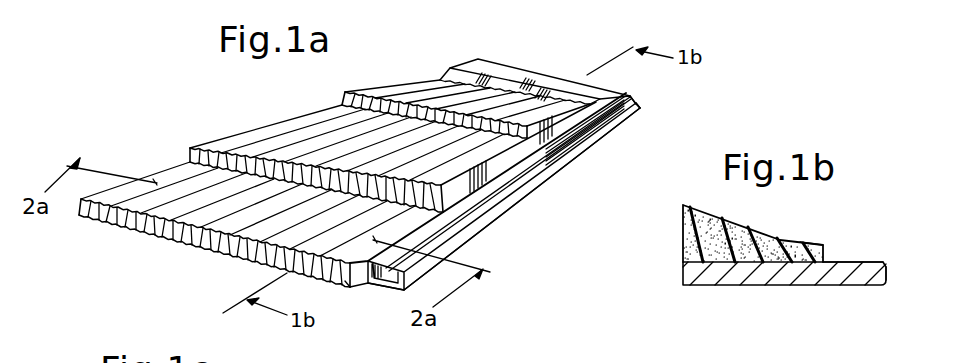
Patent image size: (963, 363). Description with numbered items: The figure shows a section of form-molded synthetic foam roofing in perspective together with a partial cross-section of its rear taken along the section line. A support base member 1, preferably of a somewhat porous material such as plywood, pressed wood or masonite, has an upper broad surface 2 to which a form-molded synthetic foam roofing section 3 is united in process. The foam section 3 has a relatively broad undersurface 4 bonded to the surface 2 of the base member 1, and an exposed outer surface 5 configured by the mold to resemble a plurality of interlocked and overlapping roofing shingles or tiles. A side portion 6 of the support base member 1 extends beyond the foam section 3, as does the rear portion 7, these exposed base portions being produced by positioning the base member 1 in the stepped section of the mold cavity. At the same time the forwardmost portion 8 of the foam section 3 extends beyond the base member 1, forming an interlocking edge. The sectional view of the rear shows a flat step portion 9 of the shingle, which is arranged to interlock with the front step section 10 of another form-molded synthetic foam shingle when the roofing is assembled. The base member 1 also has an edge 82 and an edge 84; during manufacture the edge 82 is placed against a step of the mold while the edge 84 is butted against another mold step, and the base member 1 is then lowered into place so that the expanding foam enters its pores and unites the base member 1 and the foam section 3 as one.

In FIG. 1A, the support base member 1 is at (557, 165).
In FIG. 1B, the support base member 1 is at (767, 270).
In FIG. 1A, the upper broad surface 2 is at (513, 185).
In FIG. 1A, the form-molded synthetic foam roofing section 3 is at (163, 238).
In FIG. 1B, the form-molded synthetic foam roofing section 3 is at (715, 220).
In FIG. 1A, the undersurface 4 is at (573, 138).
In FIG. 1A, the exposed outer surface 5 is at (268, 135).
In FIG. 1A, the side portion 6 is at (464, 218).
In FIG. 1A, the rear portion 7 is at (579, 81).
In FIG. 1B, the rear portion 7 is at (857, 262).
In FIG. 1A, the forwardmost portion 8 is at (371, 290).
In FIG. 1A, the flat step portion 9 is at (448, 72).
In FIG. 1B, the flat step portion 9 is at (808, 243).
In FIG. 1A, the front step section 10 is at (345, 287).
In FIG. 1A, the edge 82 is at (627, 108).
In FIG. 1A, the edge 84 is at (625, 92).
In FIG. 1B, the edge 84 is at (888, 280).